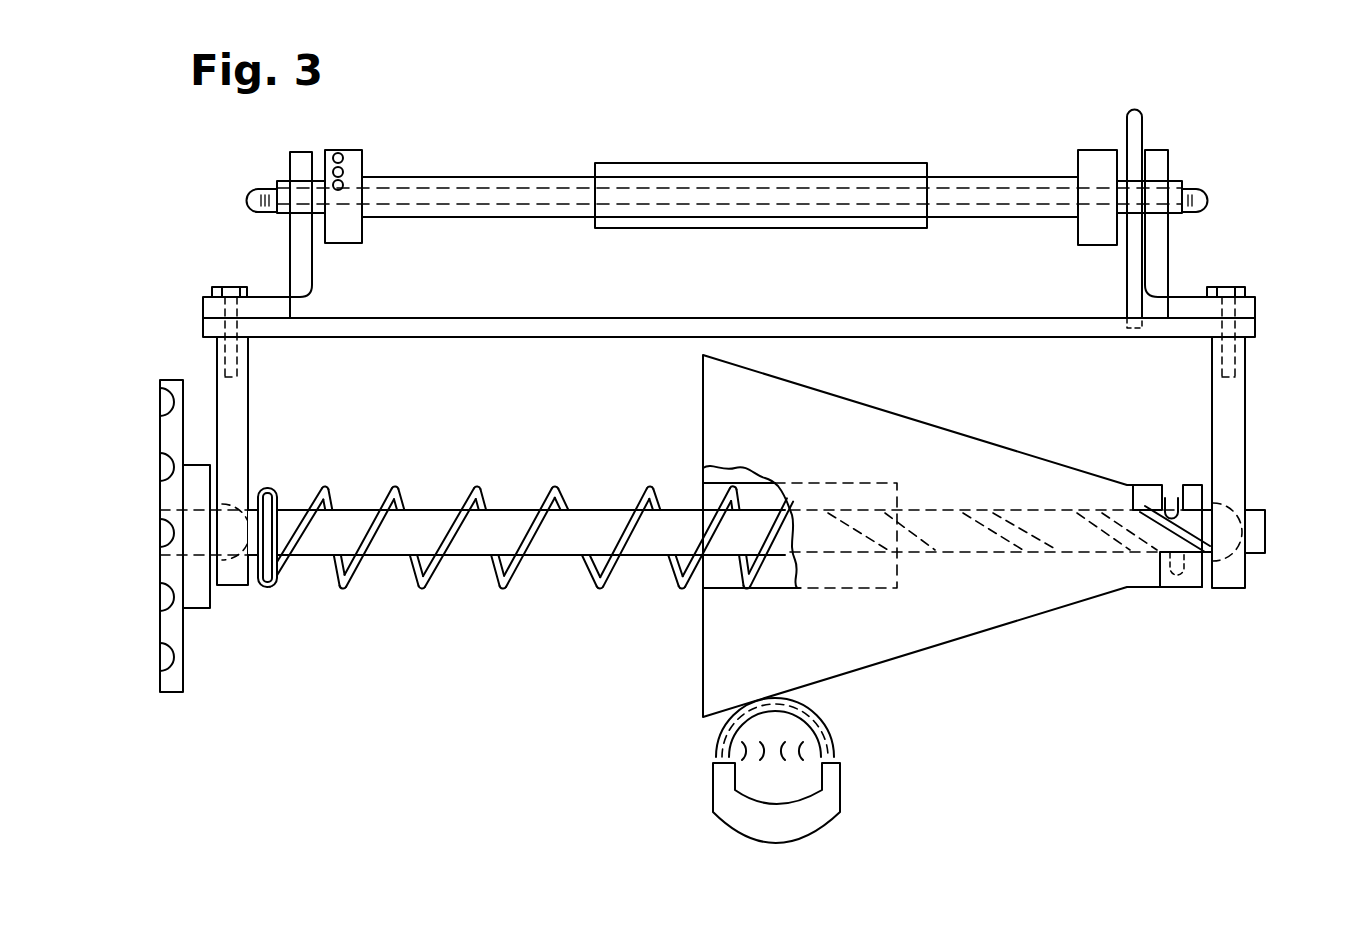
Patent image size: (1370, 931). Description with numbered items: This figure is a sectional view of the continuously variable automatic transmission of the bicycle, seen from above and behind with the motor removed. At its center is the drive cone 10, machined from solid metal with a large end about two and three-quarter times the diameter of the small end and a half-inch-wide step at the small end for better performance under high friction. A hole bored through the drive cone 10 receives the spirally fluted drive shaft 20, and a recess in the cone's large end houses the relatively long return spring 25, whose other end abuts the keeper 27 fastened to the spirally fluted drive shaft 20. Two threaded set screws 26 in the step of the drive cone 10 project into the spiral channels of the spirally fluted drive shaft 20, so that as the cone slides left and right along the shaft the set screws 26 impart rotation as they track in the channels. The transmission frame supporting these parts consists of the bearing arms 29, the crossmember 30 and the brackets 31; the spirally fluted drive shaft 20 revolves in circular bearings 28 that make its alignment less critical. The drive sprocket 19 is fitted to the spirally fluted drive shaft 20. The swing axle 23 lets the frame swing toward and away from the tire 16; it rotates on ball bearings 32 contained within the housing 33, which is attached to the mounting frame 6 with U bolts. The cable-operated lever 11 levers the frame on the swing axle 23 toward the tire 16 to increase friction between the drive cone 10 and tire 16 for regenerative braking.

The mounting frame 6 is at (808, 164).
The drive cone 10 is at (985, 634).
The lever 11 is at (1135, 128).
The tire 16 is at (835, 738).
The drive sprocket 19 is at (172, 692).
The spirally fluted drive shaft 20 is at (555, 557).
The swing axle 23 is at (250, 200).
The return spring 25 is at (425, 585).
The set screws 26 is at (1168, 500).
The keeper 27 is at (268, 588).
The circular bearings 28 is at (243, 500).
The bearing arms 29 is at (235, 405).
The crossmember 30 is at (500, 338).
The brackets 31 is at (305, 295).
The ball bearings 32 is at (345, 200).
The housing 33 is at (493, 177).